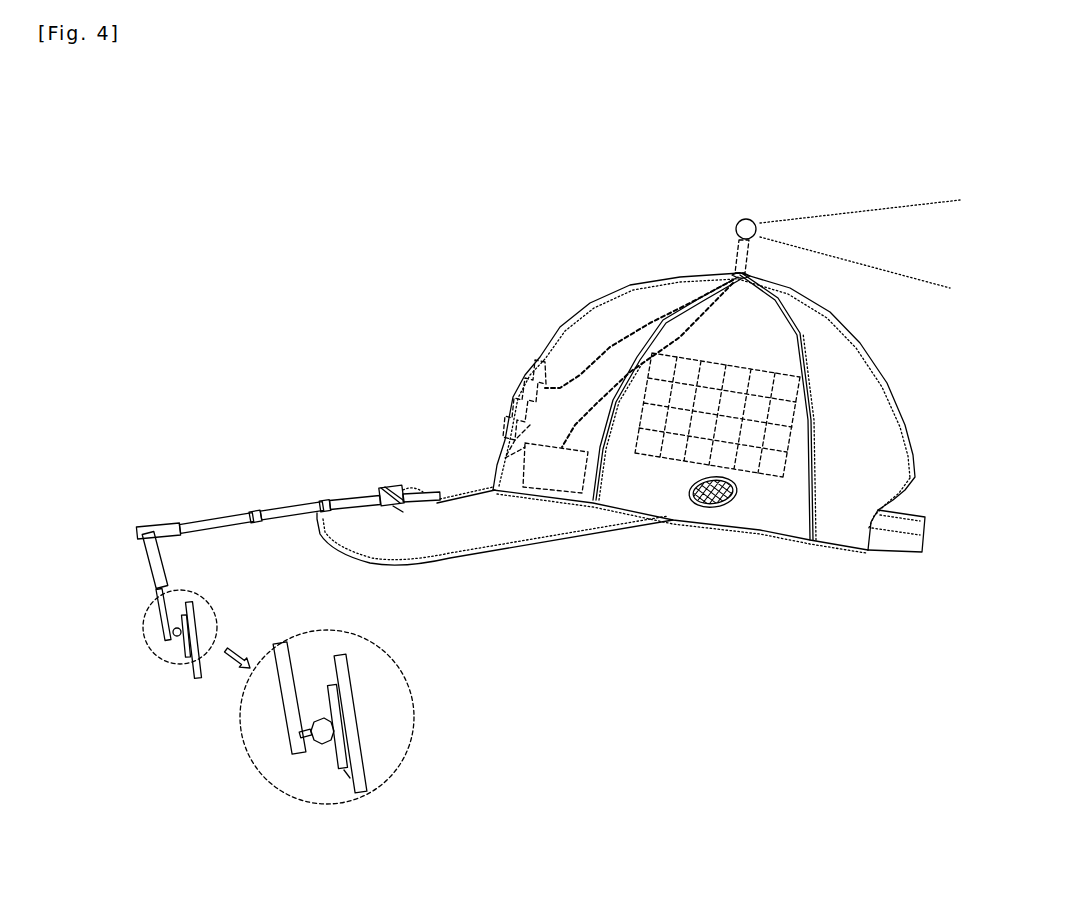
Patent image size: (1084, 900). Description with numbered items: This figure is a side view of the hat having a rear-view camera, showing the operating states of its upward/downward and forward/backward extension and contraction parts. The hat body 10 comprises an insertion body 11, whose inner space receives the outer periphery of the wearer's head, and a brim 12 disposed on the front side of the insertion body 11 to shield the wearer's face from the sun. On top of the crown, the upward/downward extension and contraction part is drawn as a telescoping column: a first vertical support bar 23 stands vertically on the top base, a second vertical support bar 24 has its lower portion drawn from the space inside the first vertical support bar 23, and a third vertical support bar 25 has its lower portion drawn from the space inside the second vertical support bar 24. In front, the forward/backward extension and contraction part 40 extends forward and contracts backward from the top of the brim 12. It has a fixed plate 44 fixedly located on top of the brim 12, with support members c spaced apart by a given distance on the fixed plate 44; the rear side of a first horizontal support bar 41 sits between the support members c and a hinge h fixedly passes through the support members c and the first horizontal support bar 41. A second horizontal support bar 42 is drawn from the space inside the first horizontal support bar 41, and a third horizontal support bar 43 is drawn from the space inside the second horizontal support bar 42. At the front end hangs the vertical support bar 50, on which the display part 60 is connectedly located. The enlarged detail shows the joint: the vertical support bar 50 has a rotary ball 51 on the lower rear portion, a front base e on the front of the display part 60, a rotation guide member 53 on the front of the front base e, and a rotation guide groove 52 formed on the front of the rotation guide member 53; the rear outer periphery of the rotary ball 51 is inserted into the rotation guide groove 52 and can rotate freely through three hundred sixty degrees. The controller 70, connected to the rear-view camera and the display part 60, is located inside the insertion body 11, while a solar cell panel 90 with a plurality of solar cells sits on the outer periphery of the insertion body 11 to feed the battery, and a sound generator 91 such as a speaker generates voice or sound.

The hat body 10 is at (621, 475).
The insertion body 11 is at (709, 413).
The brim 12 is at (567, 527).
The first vertical support bar 23 is at (750, 277).
The second vertical support bar 24 is at (737, 260).
The third vertical support bar 25 is at (738, 238).
The forward/backward extension and contraction part 40 is at (261, 525).
The first horizontal support bar 41 is at (210, 515).
The second horizontal support bar 42 is at (293, 500).
The third horizontal support bar 43 is at (378, 487).
The fixed plate 44 is at (340, 500).
The vertical support bar 50 is at (324, 749).
The rotary ball 51 is at (287, 730).
The rotation guide groove 52 is at (338, 705).
The rotation guide member 53 is at (323, 745).
The display part 60 is at (363, 753).
The controller 70 is at (515, 402).
The solar cell panel 90 is at (763, 370).
The sound generator 91 is at (715, 510).
The hinge h is at (397, 512).
The support members c is at (428, 503).
The front base e is at (347, 777).